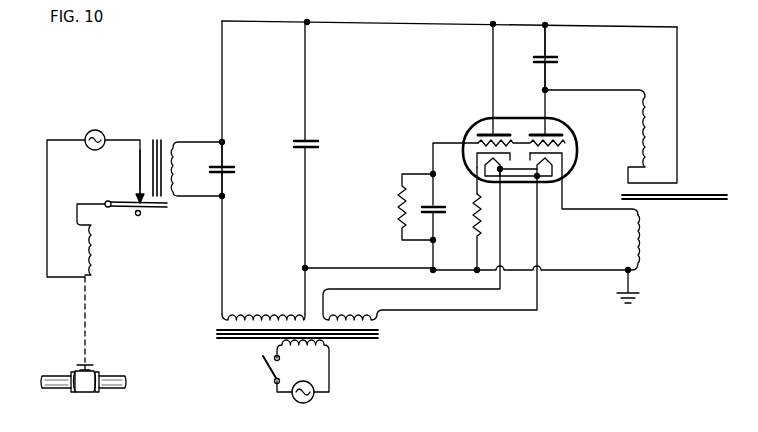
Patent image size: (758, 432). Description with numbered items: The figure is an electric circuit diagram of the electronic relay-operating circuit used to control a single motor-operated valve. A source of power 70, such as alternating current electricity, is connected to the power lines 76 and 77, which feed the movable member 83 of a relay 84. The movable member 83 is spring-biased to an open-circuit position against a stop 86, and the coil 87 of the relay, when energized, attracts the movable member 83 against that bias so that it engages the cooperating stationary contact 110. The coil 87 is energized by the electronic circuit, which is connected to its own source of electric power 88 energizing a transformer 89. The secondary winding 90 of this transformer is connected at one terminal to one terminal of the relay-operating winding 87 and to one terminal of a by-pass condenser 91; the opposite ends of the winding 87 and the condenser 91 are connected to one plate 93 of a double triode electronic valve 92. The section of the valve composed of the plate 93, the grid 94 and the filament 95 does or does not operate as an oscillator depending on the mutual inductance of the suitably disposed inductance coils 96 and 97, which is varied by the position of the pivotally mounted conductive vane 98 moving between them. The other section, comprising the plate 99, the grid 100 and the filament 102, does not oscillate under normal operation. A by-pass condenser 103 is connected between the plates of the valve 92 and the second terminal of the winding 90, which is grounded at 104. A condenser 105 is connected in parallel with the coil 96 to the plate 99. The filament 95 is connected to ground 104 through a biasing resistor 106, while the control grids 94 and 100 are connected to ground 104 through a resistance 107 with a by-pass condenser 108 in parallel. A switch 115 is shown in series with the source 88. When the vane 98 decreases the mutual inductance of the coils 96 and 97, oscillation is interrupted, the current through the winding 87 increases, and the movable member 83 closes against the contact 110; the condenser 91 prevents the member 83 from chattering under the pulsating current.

The source of power 70 is at (88, 132).
The power line 76 is at (140, 160).
The power line 77 is at (47, 195).
The movable member 83 is at (165, 208).
The relay 84 is at (146, 128).
The stop 86 is at (135, 217).
The coil 87 is at (177, 170).
The source of electric power 88 is at (296, 402).
The transformer 89 is at (352, 357).
The secondary winding 90 is at (270, 314).
The by-pass condenser 91 is at (235, 170).
The double triode electronic valve 92 is at (468, 114).
The plate 93 is at (476, 133).
The grid 94 is at (476, 143).
The filament 95 is at (477, 170).
The inductance coil 96 is at (636, 118).
The inductance coil 97 is at (634, 240).
The vane 98 is at (688, 196).
The plate 99 is at (560, 134).
The grid 100 is at (562, 143).
The filament 102 is at (562, 158).
The by-pass condenser 103 is at (293, 143).
The ground 104 is at (620, 300).
The condenser 105 is at (557, 58).
The biasing resistor 106 is at (474, 233).
The resistance 107 is at (397, 202).
The by-pass condenser 108 is at (445, 209).
The stationary contact 110 is at (135, 192).
The switch 115 is at (268, 368).